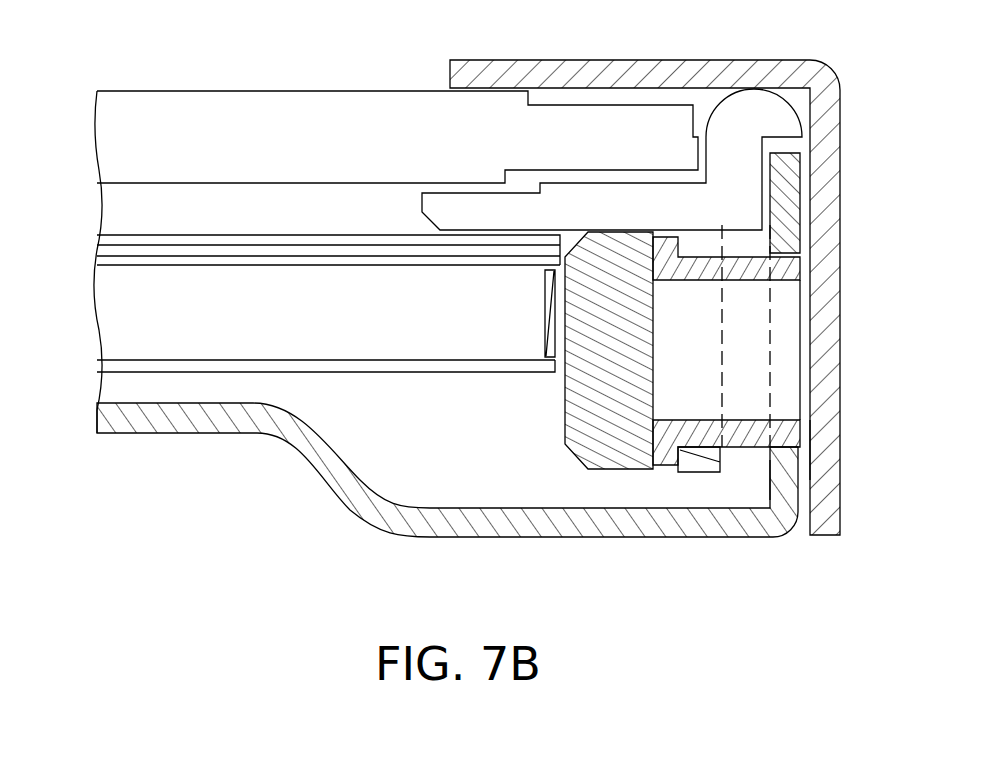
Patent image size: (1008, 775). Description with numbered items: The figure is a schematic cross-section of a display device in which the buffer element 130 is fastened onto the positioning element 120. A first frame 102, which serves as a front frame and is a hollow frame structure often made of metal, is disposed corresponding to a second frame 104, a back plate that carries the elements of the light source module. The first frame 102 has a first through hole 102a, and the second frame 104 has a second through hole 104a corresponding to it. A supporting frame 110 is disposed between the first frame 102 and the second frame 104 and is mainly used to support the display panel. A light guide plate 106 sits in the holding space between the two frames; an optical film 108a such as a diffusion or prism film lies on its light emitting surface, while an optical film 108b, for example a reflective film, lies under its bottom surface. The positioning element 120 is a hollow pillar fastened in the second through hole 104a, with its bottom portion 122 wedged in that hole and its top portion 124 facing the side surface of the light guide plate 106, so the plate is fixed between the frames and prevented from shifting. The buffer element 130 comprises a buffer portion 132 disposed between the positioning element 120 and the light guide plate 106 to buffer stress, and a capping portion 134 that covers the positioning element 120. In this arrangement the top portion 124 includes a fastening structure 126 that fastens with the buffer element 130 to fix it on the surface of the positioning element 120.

The first frame 102 is at (830, 150).
The first through hole 102a is at (822, 452).
The second frame 104 is at (737, 517).
The second through hole 104a is at (787, 425).
The light guide plate 106 is at (123, 315).
The optical film 108a is at (88, 230).
The optical film 108b is at (100, 362).
The supporting frame 110 is at (748, 102).
The positioning element 120 is at (754, 309).
The bottom portion 122 is at (813, 239).
The top portion 124 is at (668, 258).
The fastening structure 126 is at (750, 260).
The buffer element 130 is at (587, 428).
The buffer portion 132 is at (573, 414).
The capping portion 134 is at (677, 462).